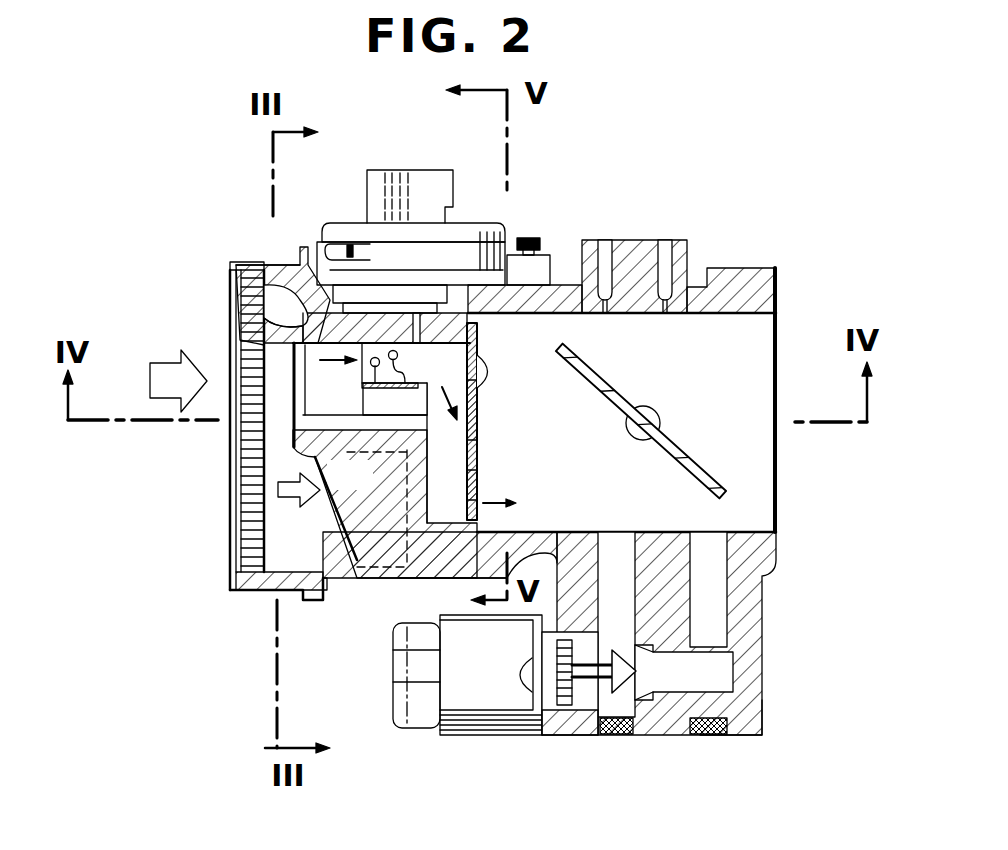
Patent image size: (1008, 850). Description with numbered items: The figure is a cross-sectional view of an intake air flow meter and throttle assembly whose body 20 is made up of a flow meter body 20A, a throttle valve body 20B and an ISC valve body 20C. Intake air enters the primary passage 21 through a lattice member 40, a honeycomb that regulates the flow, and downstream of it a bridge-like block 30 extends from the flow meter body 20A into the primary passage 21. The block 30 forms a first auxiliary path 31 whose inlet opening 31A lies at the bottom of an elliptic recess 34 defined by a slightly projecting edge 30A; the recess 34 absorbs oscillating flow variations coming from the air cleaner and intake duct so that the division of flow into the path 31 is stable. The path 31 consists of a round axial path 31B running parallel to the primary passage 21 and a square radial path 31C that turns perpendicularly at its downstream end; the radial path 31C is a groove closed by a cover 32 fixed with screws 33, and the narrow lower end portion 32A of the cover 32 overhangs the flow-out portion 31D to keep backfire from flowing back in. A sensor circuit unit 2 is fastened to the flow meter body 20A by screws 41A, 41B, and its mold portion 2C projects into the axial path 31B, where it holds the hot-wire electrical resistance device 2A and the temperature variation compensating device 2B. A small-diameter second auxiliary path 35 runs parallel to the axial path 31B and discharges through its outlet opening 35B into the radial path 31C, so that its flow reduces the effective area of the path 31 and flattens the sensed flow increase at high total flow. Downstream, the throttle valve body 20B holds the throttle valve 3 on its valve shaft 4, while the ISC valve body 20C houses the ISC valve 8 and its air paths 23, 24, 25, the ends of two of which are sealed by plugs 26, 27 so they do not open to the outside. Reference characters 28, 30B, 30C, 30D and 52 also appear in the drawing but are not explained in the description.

The sensor circuit unit 2 is at (350, 223).
The electrical resistance device 2A is at (344, 508).
The temperature variation compensating device 2B is at (490, 374).
The mold portion 2C is at (447, 320).
The throttle valve 3 is at (706, 478).
The valve shaft 4 is at (656, 414).
The ISC valve 8 is at (496, 735).
The body 20 is at (760, 268).
The flow meter body 20A is at (292, 593).
The throttle valve body 20B is at (705, 275).
The ISC valve body 20C is at (757, 733).
The primary passage 21 is at (232, 578).
The air path 23 is at (613, 585).
The air path 24 is at (717, 672).
The air path 25 is at (762, 585).
The plug 26 is at (615, 735).
The plug 27 is at (710, 735).
The inlet wall 28 is at (280, 270).
The block 30 is at (370, 578).
The edge 30A is at (232, 481).
The hidden passage 30B is at (407, 568).
The locating tab 30C is at (325, 600).
The bottom wall 30D is at (440, 578).
The first auxiliary path 31 is at (547, 310).
The inlet opening 31A is at (240, 330).
The axial path 31B is at (240, 270).
The radial path 31C is at (482, 490).
The flow-out portion 31D is at (480, 522).
The cover 32 is at (482, 405).
The lower end portion 32A is at (480, 512).
The screws 33 is at (484, 345).
The elliptic recess 34 is at (290, 350).
The second auxiliary path 35 is at (305, 428).
The outlet opening 35B is at (467, 440).
The lattice member 40 is at (262, 500).
The screw 41A is at (341, 246).
The screw 41B is at (530, 238).
The air flow 52 is at (150, 385).